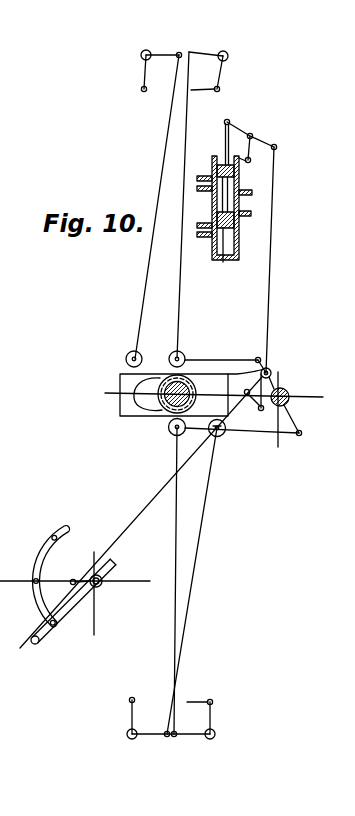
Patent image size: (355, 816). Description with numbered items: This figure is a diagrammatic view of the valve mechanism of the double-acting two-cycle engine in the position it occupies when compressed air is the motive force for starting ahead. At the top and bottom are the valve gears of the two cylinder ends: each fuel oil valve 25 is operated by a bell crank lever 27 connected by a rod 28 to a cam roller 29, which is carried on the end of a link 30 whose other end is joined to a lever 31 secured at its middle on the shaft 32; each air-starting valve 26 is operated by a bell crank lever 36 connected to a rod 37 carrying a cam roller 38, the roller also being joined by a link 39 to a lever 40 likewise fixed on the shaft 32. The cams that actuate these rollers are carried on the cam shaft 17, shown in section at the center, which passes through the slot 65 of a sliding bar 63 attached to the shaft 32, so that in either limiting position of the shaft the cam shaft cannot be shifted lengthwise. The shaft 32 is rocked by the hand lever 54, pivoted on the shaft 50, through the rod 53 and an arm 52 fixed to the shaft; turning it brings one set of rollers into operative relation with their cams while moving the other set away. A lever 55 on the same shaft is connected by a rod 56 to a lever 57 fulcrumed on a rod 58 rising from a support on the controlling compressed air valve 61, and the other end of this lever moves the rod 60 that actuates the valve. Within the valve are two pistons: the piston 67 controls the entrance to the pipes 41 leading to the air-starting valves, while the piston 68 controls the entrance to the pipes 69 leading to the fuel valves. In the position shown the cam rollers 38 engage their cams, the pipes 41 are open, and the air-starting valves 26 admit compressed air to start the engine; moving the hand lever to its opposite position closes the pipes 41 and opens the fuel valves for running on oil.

The cam shaft 17 is at (190, 401).
The fuel oil valve 25 is at (141, 89).
The air-starting valve 26 is at (200, 93).
The bell crank lever 27 is at (166, 54).
The rod 28 is at (142, 305).
The cam roller 29 is at (125, 360).
The link 30 is at (155, 356).
The lever 31 is at (292, 413).
The shaft 32 is at (290, 393).
The bell crank lever 36 is at (222, 72).
The rod 37 is at (182, 308).
The cam roller 38 is at (185, 355).
The link 39 is at (219, 358).
The lever 40 is at (294, 424).
The pipe 41 is at (211, 173).
The shaft 50 is at (103, 587).
The arm 52 is at (247, 395).
The rod 53 is at (140, 514).
The hand lever 54 is at (49, 642).
The lever 55 is at (264, 399).
The rod 56 is at (273, 276).
The lever 57 is at (261, 141).
The rod 58 is at (254, 149).
The rod 60 is at (224, 143).
The controlling compressed air valve 61 is at (237, 261).
The sliding bar 63 is at (236, 395).
The slot 65 is at (150, 411).
The piston 67 is at (239, 176).
The piston 68 is at (239, 228).
The pipe 69 is at (201, 236).